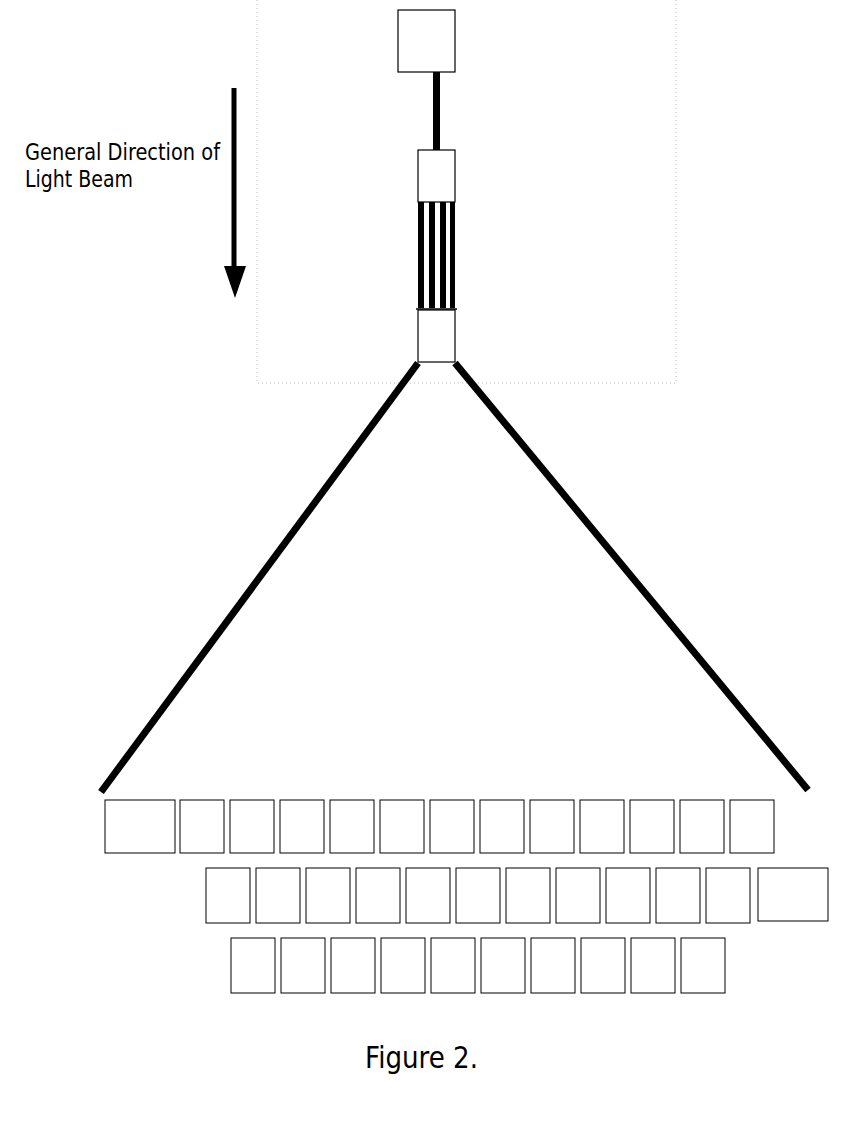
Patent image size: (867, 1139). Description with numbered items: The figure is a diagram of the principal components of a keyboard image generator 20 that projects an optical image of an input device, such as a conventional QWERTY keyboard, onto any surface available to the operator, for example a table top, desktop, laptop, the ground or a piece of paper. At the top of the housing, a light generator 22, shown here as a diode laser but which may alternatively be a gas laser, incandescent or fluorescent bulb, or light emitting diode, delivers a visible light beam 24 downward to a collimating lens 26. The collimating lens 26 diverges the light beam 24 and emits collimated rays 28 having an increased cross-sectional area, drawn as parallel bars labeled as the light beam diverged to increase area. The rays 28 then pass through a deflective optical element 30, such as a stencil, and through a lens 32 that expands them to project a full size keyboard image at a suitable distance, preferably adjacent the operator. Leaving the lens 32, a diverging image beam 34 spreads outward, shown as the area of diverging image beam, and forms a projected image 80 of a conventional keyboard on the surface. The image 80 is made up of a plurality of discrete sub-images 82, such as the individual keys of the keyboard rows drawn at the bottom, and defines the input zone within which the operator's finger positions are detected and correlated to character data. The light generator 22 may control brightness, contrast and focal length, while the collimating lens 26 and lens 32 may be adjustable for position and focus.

The image generator 20 is at (675, 73).
The light generator 22 is at (445, 48).
The light beam 24 is at (436, 104).
The collimating lens 26 is at (418, 178).
The collimated rays 28 is at (418, 240).
The deflective optical element 30 is at (457, 307).
The lens 32 is at (457, 350).
The diverging image beam 34 is at (640, 573).
The image 80 is at (738, 940).
The discrete sub-images 82 is at (338, 800).